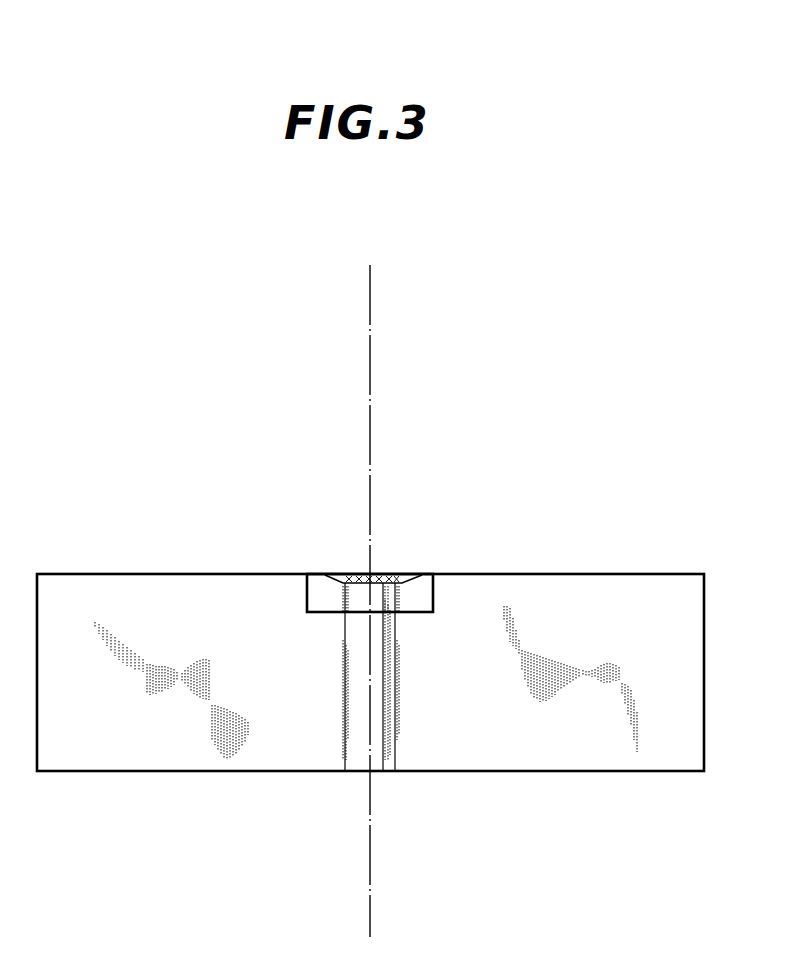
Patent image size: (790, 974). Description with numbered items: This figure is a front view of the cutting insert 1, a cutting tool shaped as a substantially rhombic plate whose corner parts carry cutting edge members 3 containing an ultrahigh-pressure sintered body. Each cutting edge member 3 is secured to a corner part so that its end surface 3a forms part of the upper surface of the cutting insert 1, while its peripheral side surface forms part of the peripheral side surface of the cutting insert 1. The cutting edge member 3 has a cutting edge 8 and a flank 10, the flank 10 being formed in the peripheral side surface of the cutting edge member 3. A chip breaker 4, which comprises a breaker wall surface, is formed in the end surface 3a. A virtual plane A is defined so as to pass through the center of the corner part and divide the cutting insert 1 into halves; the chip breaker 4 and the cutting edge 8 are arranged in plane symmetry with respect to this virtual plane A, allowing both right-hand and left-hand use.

The virtual plane A is at (369, 357).
The cutting insert 1 is at (552, 640).
The end surface 3a is at (330, 573).
The cutting edge member 3 is at (357, 590).
The chip breaker 4 is at (384, 575).
The flank 10 is at (360, 604).
The cutting edge 8 is at (387, 590).